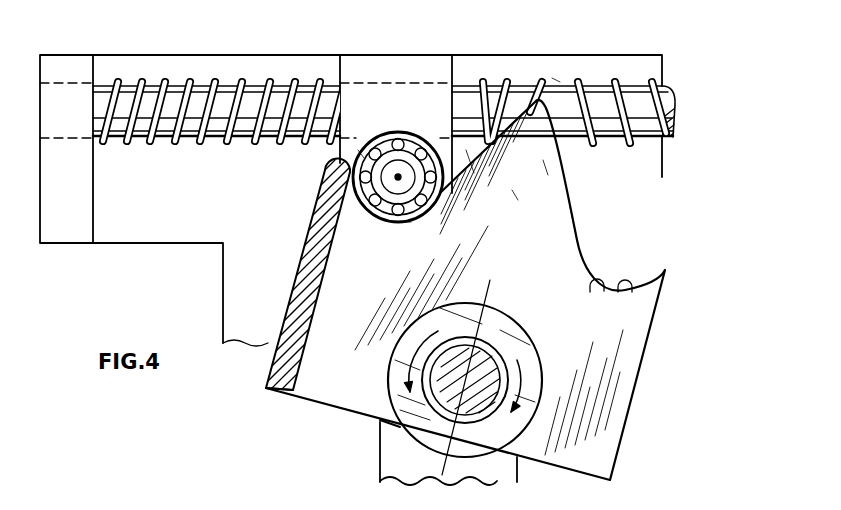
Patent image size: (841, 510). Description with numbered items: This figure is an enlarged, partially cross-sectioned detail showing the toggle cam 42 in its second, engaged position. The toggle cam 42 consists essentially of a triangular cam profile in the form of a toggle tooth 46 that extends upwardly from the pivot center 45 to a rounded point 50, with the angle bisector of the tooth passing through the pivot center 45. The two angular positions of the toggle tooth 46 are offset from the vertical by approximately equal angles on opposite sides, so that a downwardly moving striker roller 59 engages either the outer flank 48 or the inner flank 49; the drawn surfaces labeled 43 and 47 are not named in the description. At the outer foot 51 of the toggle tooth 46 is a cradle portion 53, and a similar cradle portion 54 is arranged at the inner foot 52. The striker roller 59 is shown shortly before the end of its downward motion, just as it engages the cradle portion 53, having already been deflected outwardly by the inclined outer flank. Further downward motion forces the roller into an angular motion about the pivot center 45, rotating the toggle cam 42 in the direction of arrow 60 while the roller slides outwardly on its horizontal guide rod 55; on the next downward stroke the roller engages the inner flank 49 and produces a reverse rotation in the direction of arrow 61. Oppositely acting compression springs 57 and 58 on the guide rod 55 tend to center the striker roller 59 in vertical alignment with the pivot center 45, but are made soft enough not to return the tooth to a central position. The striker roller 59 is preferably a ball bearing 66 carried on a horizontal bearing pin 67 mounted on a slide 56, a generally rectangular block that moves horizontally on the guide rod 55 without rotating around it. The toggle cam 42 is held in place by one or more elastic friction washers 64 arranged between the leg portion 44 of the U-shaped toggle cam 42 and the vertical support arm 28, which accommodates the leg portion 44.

The vertical support arm 28 is at (400, 460).
The toggle cam 42 is at (280, 393).
The lever arm 43 is at (305, 302).
The leg portion 44 is at (620, 410).
The pivot center 45 is at (465, 380).
The toggle tooth 46 is at (543, 167).
The cam flank 47 is at (515, 195).
The outer flank 48 is at (474, 173).
The inner flank 49 is at (577, 235).
The rounded point 50 is at (556, 80).
The outer foot 51 is at (407, 223).
The inner foot 52 is at (600, 292).
The cradle portion 53 is at (367, 215).
The cradle portion 54 is at (635, 293).
The guide rod 55 is at (513, 98).
The slide 56 is at (398, 65).
The compression spring 57 is at (270, 80).
The compression spring 58 is at (615, 80).
The striker roller 59 is at (407, 122).
The arrow 60 is at (423, 350).
The arrow 61 is at (523, 377).
The elastic friction washers 64 is at (387, 395).
The ball bearing 66 is at (361, 152).
The bearing pin 67 is at (383, 176).